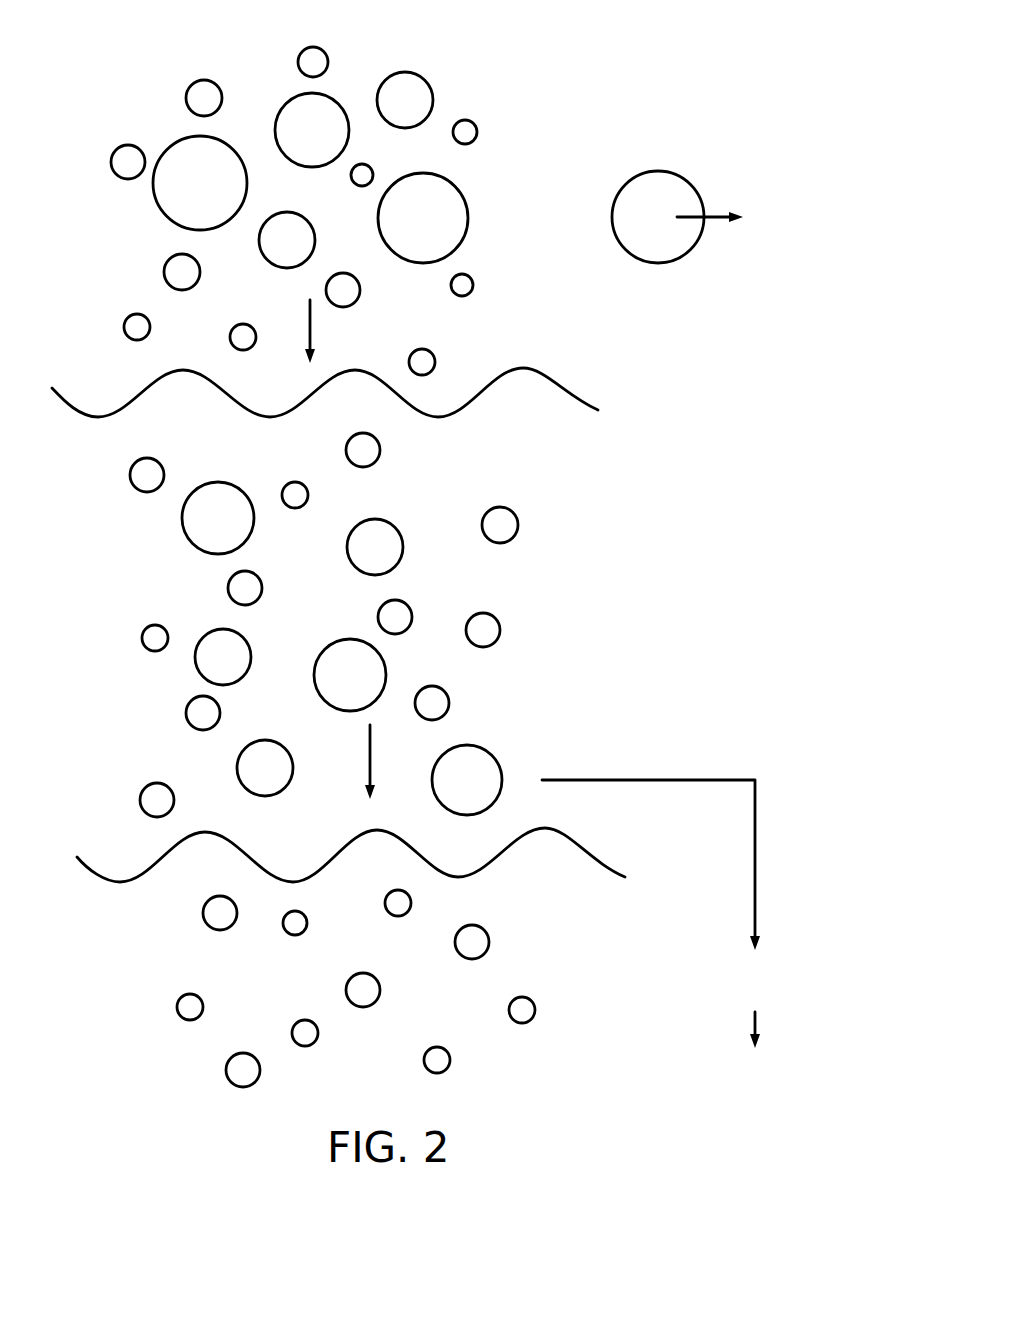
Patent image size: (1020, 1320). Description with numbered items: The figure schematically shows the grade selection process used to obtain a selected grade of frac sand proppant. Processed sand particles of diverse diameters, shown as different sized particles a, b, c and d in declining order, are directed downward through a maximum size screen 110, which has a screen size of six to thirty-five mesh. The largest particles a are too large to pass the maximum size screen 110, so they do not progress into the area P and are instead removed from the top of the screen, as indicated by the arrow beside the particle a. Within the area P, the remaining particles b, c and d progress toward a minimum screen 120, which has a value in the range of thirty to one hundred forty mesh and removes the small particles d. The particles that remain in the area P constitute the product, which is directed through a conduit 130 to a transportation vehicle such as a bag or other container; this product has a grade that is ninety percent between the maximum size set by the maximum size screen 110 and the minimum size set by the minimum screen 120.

The largest particles a is at (175, 202).
The large particles b is at (292, 110).
The medium particles c is at (303, 235).
The small particles d is at (173, 271).
The maximum size screen 110 is at (548, 374).
The minimum screen 120 is at (582, 842).
The conduit 130 is at (757, 828).
The area P is at (597, 547).